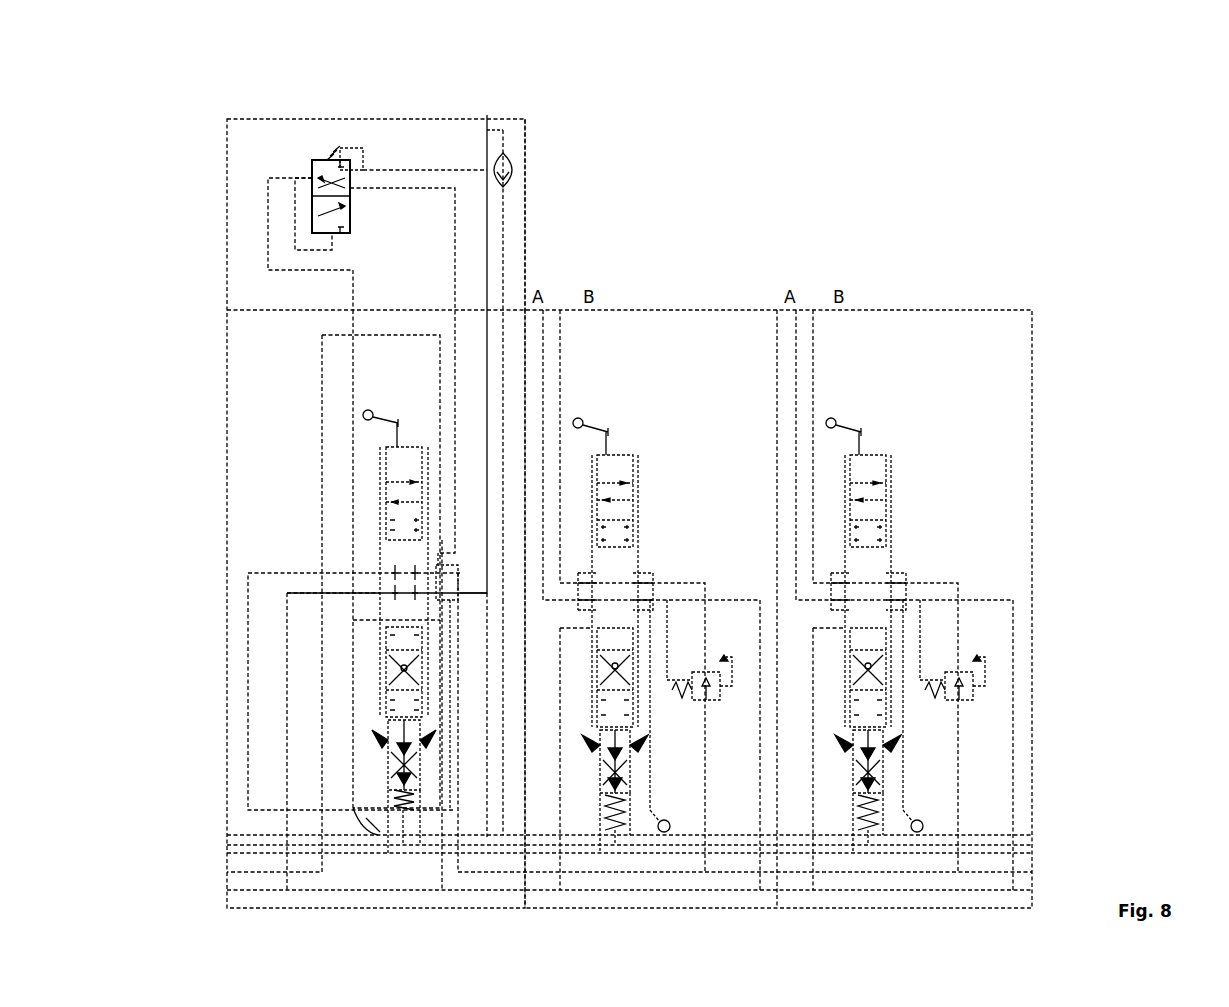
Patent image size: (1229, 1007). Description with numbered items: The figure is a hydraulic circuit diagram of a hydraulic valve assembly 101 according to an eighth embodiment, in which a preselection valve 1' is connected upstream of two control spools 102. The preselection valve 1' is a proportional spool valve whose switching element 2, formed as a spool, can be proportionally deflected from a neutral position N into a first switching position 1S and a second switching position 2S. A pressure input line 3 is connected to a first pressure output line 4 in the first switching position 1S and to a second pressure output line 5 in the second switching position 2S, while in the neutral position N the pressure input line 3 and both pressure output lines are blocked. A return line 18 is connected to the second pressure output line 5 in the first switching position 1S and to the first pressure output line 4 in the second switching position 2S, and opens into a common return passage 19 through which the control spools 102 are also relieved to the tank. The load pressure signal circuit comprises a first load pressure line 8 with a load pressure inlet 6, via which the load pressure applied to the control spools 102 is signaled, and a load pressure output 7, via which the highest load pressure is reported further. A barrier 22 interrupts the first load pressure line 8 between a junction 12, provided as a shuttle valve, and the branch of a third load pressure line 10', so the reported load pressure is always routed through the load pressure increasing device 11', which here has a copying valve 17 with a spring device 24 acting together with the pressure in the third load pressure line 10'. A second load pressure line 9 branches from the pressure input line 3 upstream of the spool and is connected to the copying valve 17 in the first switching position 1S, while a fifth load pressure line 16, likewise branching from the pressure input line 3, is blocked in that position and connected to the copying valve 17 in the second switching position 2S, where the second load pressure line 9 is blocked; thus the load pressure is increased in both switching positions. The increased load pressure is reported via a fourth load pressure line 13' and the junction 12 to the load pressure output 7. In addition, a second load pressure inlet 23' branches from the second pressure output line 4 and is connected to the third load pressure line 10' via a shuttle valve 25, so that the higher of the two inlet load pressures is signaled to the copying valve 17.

The preselection valve 1' is at (587, 513).
The hydraulic valve assembly 101 is at (416, 80).
The control spools 102 is at (688, 300).
The switching element 2 is at (412, 447).
The first switching position 1S is at (400, 490).
The second switching position 2S is at (403, 640).
The neutral position N is at (412, 560).
The pressure input line 3 is at (322, 606).
The first pressure output line 4 is at (458, 690).
The second pressure output line 5 is at (487, 408).
The load pressure inlet 6 is at (526, 835).
The load pressure output 7 is at (227, 835).
The first load pressure line 8 is at (505, 835).
The second load pressure line 9 is at (322, 372).
The third load pressure line 10' is at (486, 404).
The load pressure increasing device 11' is at (565, 214).
The junction 12 is at (358, 835).
The fourth load pressure line 13' is at (396, 559).
The fifth load pressure line 16 is at (290, 573).
The copying valve 17 is at (352, 215).
The return line 18 is at (287, 596).
The common return passage 19 is at (388, 892).
The barrier 22 is at (485, 835).
The second load pressure inlet 23' is at (520, 108).
The spring device 24 is at (330, 150).
The shuttle valve 25 is at (512, 172).